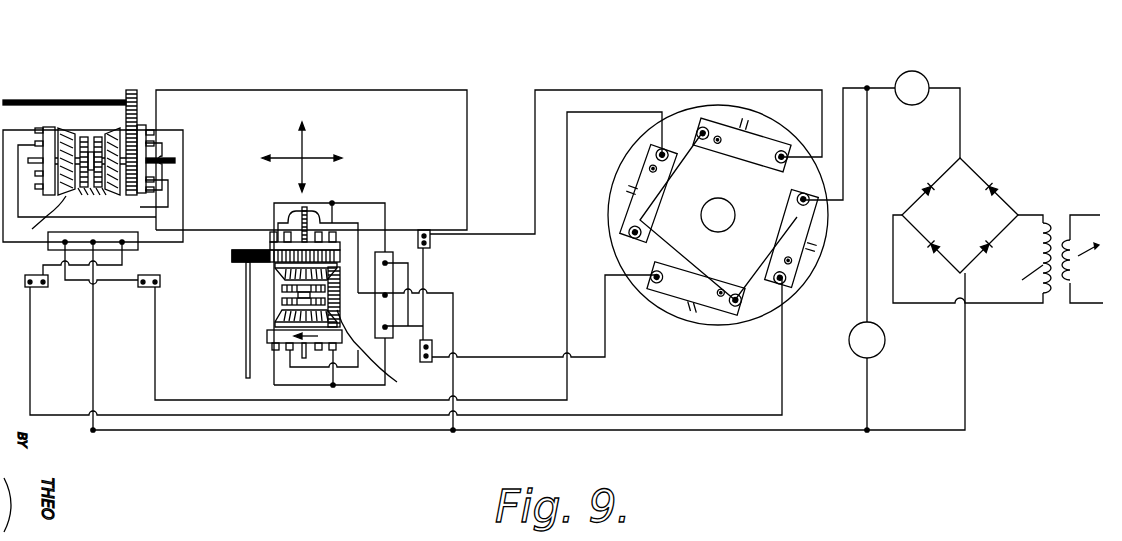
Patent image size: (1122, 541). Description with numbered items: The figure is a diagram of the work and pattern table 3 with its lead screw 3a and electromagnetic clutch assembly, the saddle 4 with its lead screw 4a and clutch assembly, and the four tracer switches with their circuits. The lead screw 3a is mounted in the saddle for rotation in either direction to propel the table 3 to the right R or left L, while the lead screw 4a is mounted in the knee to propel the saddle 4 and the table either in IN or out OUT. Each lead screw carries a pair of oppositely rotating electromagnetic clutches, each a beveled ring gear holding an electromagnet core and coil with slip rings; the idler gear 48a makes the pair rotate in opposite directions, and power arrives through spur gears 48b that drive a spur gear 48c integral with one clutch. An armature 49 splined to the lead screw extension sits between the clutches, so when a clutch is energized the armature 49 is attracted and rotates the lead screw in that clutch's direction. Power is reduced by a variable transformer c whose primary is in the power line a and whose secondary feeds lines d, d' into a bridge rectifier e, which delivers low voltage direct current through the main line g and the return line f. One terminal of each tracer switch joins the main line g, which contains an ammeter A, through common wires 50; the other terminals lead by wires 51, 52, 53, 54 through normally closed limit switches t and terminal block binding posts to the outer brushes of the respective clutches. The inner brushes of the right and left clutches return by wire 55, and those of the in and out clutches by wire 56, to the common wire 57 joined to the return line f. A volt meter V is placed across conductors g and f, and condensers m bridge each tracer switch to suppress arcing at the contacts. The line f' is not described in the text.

The table 3 is at (392, 90).
The lead screw 3a is at (175, 161).
The saddle 4 is at (348, 295).
The lead screw 4a is at (318, 207).
The idler gear 48a is at (214, 295).
The spur gear 48b is at (133, 91).
The driven spur gear 48c is at (180, 204).
The armature 49 is at (88, 138).
The common wires 50 is at (786, 215).
The wire 51 is at (650, 416).
The wire 52 is at (520, 402).
The wire 53 is at (523, 364).
The wire 54 is at (527, 234).
The wire 55 is at (97, 356).
The wire 56 is at (454, 330).
The common wire 57 is at (644, 428).
The condenser m is at (757, 122).
The normally closed limit switch t is at (43, 288).
The ammeter A is at (881, 135).
The volt meter V is at (867, 259).
The bridge rectifier e is at (960, 215).
The main line g is at (960, 118).
The return line f is at (971, 349).
The lead f' is at (1086, 307).
The electric line d is at (1030, 208).
The electric line d' is at (968, 260).
The transformer c is at (1041, 276).
The power current line a is at (1081, 238).
The in direction IN is at (299, 148).
The out direction OUT is at (300, 193).
The left direction L is at (294, 159).
The right direction R is at (342, 159).